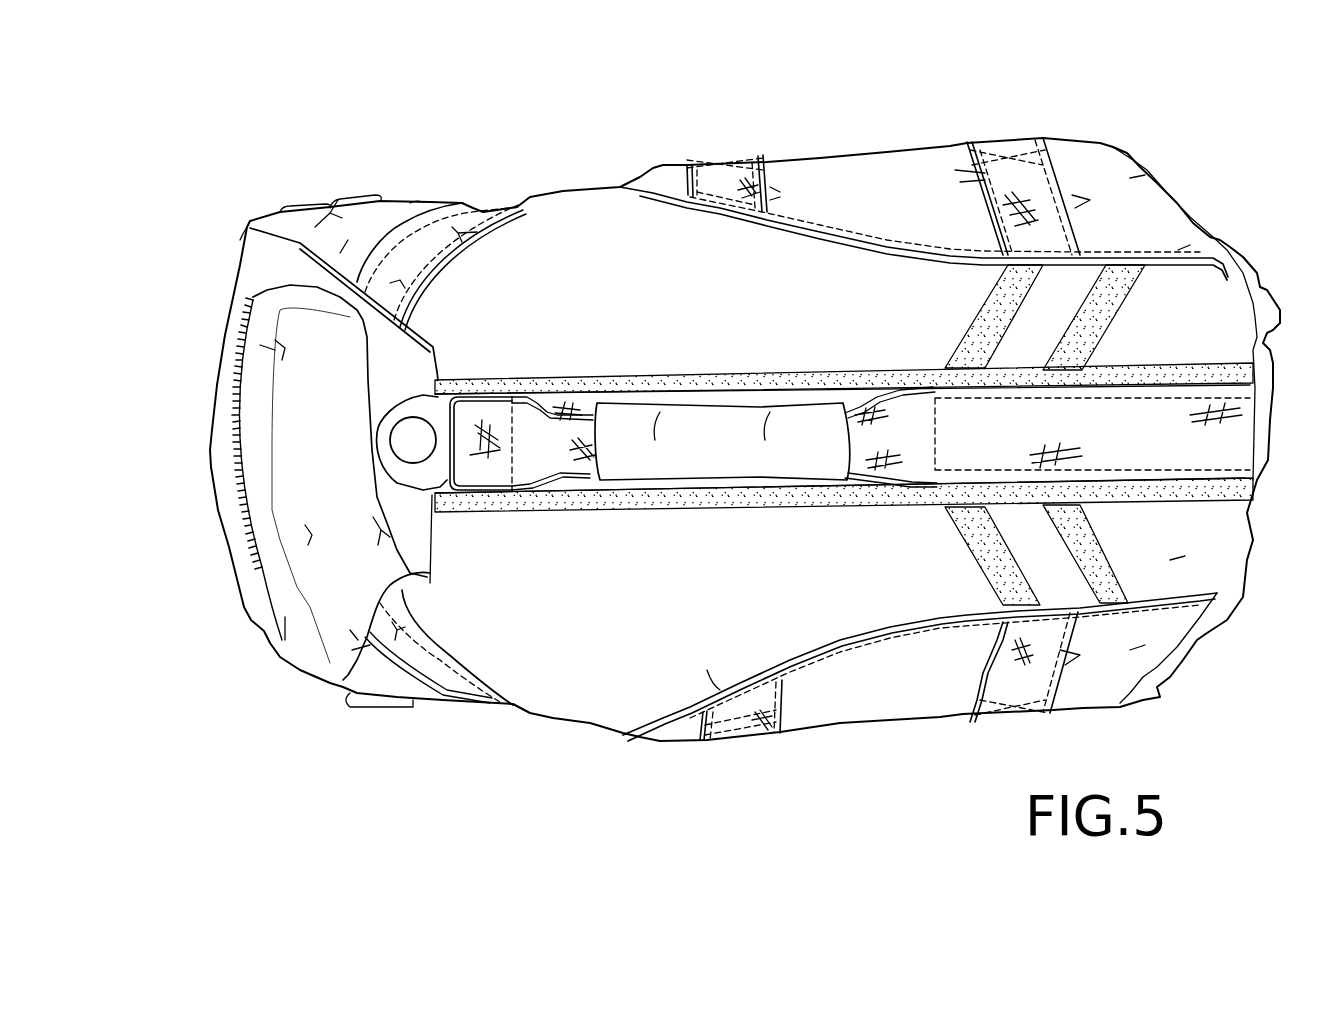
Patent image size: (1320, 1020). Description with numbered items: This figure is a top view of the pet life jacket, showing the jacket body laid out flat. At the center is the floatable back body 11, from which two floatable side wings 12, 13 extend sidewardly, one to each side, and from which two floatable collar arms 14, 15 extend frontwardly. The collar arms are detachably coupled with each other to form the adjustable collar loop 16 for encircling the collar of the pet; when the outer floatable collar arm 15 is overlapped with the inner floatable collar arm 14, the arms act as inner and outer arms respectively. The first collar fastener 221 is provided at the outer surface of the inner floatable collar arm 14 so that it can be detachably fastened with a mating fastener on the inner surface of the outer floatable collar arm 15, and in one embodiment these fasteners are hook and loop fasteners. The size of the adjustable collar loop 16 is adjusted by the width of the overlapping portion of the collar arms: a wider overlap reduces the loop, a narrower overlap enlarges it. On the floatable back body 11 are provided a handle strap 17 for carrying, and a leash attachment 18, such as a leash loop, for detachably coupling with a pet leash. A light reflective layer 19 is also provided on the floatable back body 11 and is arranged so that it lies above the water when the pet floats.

The floatable back body 11 is at (829, 330).
The floatable side wing 12 is at (880, 691).
The floatable side wing 13 is at (893, 211).
The inner floatable collar arm 14 is at (285, 640).
The outer floatable collar arm 15 is at (250, 273).
The adjustable collar loop 16 is at (313, 452).
The handle strap 17 is at (718, 432).
The leash attachment 18 is at (440, 467).
The light reflective layer 19 is at (1102, 292).
The first collar fastener 221 is at (238, 357).